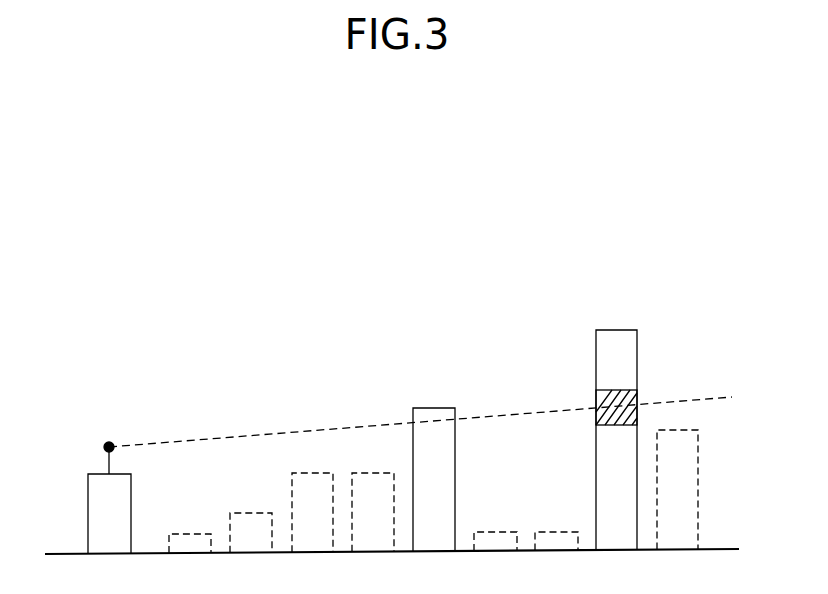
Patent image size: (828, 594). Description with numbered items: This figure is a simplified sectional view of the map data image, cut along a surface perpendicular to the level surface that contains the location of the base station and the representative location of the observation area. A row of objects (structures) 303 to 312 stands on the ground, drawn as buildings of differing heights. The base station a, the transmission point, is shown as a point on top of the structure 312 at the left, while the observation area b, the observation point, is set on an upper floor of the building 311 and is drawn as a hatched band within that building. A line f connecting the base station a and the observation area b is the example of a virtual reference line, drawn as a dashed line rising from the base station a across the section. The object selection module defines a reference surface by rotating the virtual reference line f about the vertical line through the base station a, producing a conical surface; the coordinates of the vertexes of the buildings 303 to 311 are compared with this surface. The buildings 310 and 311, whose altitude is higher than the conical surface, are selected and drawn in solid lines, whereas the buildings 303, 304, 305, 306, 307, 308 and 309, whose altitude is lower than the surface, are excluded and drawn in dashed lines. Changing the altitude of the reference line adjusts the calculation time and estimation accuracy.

The building 303 is at (193, 534).
The building 304 is at (247, 513).
The building 305 is at (313, 473).
The building 306 is at (374, 473).
The building 307 is at (505, 532).
The building 308 is at (565, 532).
The building 309 is at (698, 441).
The building 310 is at (432, 408).
The building 311 is at (617, 330).
The object (structure) 312 is at (93, 474).
The base station a is at (107, 438).
The observation area b is at (637, 405).
The virtual reference line f is at (699, 398).